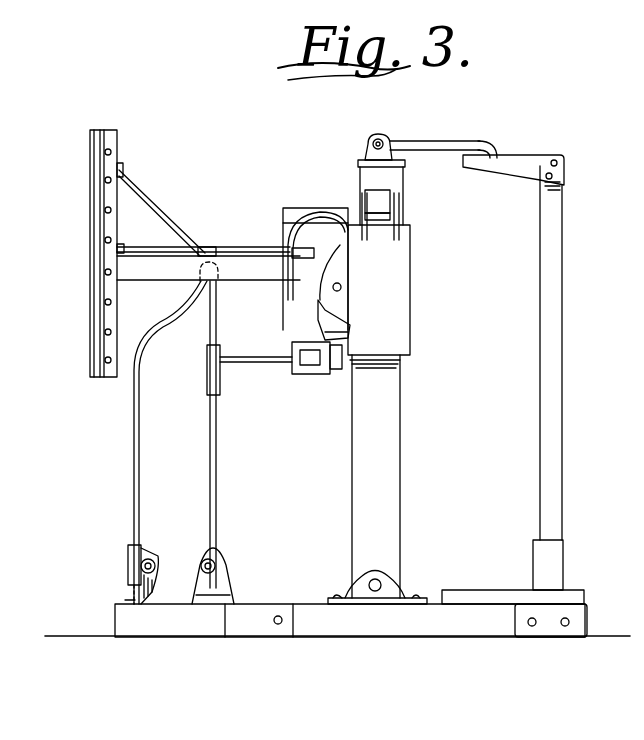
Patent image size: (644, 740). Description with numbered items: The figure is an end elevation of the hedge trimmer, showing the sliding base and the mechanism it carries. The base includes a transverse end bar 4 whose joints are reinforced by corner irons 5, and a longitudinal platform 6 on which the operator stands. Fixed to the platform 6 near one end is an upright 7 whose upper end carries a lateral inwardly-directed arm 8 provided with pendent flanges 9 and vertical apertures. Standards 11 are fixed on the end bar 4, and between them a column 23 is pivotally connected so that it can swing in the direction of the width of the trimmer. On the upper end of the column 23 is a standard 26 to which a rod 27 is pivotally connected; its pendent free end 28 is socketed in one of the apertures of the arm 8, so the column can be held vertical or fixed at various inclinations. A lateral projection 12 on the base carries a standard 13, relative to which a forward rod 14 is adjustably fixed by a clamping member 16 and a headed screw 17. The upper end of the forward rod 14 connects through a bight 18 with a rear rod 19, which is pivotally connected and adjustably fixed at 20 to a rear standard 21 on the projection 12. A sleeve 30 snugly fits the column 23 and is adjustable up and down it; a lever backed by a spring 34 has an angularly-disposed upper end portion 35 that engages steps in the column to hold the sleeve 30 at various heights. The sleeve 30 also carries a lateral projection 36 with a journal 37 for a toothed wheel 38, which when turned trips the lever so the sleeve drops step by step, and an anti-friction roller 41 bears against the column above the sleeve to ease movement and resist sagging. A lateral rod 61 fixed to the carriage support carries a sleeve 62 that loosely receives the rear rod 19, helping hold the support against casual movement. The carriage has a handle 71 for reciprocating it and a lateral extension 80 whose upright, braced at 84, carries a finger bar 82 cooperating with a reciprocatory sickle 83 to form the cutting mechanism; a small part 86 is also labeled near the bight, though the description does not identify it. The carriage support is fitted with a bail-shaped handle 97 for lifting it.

The transverse end bar 4 is at (395, 622).
The corner iron 5 is at (268, 622).
The longitudinal platform 6 is at (575, 595).
The upright 7 is at (562, 362).
The lateral inwardly-directed arm 8 is at (545, 160).
The pendent flange 9 is at (503, 165).
The standard 11 is at (384, 593).
The lateral projection 12 is at (172, 625).
The standard 13 is at (158, 593).
The forward rod 14 is at (140, 442).
The clamping member 16 is at (145, 560).
The headed screw 17 is at (128, 574).
The bight 18 is at (206, 246).
The rear rod 19 is at (220, 472).
The pivotal connection 20 is at (218, 583).
The rear standard 21 is at (216, 596).
The column 23 is at (402, 476).
The standard 26 is at (384, 136).
The rod 27 is at (446, 141).
The pendent free end 28 is at (508, 150).
The sleeve 30 is at (395, 302).
The spring 34 is at (322, 252).
The angularly-disposed upper end portion 35 is at (342, 212).
The lateral projection 36 is at (345, 340).
The journal 37 is at (330, 368).
The wheel 38 is at (292, 352).
The anti-friction roller 41 is at (388, 198).
The lateral rod 61 is at (268, 350).
The sleeve 62 is at (207, 372).
The handle 71 is at (338, 182).
The lateral extension 80 is at (244, 268).
The finger bar 82 is at (105, 165).
The reciprocatory sickle 83 is at (93, 245).
The brace 84 is at (178, 218).
The plate 86 is at (212, 248).
The bail-shaped handle 97 is at (293, 208).